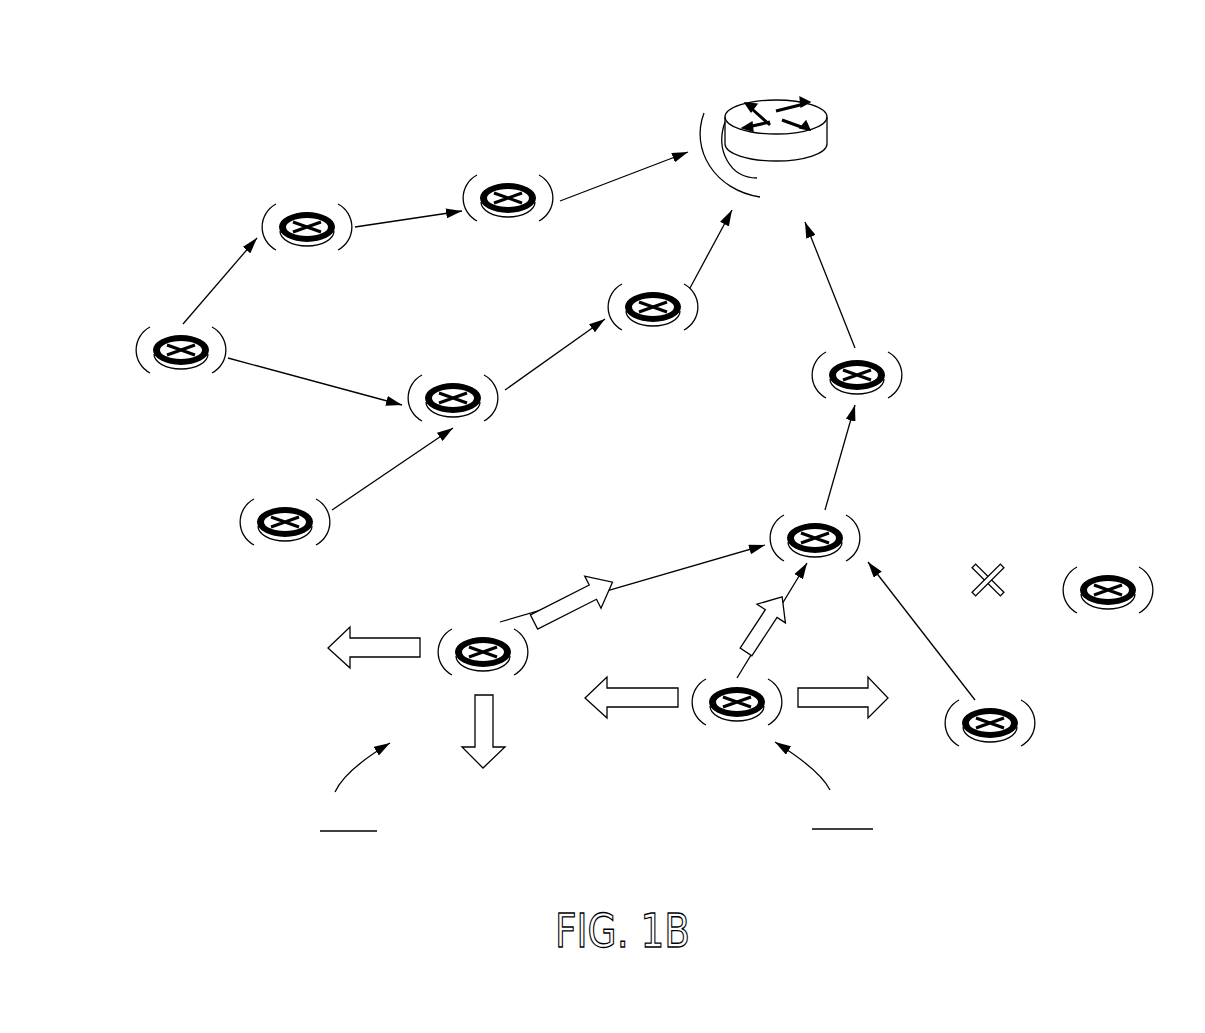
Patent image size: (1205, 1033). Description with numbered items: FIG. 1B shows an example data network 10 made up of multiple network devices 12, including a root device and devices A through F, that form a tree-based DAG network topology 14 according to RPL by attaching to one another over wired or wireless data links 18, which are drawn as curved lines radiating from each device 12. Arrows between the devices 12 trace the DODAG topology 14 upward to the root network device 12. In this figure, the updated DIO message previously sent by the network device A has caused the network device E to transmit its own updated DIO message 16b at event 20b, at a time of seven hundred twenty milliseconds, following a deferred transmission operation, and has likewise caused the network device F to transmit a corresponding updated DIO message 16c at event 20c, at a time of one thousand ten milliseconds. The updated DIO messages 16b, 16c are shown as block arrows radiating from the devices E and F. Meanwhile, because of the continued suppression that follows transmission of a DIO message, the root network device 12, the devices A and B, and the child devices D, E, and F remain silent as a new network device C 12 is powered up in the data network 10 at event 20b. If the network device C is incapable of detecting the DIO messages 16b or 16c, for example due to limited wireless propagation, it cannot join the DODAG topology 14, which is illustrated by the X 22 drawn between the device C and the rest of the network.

The data network 10 is at (1108, 110).
The network device 12 is at (802, 102).
The DAG network topology 14 is at (615, 168).
The updated DIO message 16b is at (560, 600).
The updated DIO message 16c is at (642, 688).
The wireless data link 18 is at (716, 113).
The event 20b is at (350, 833).
The event 20c is at (840, 833).
The X 22 is at (988, 553).